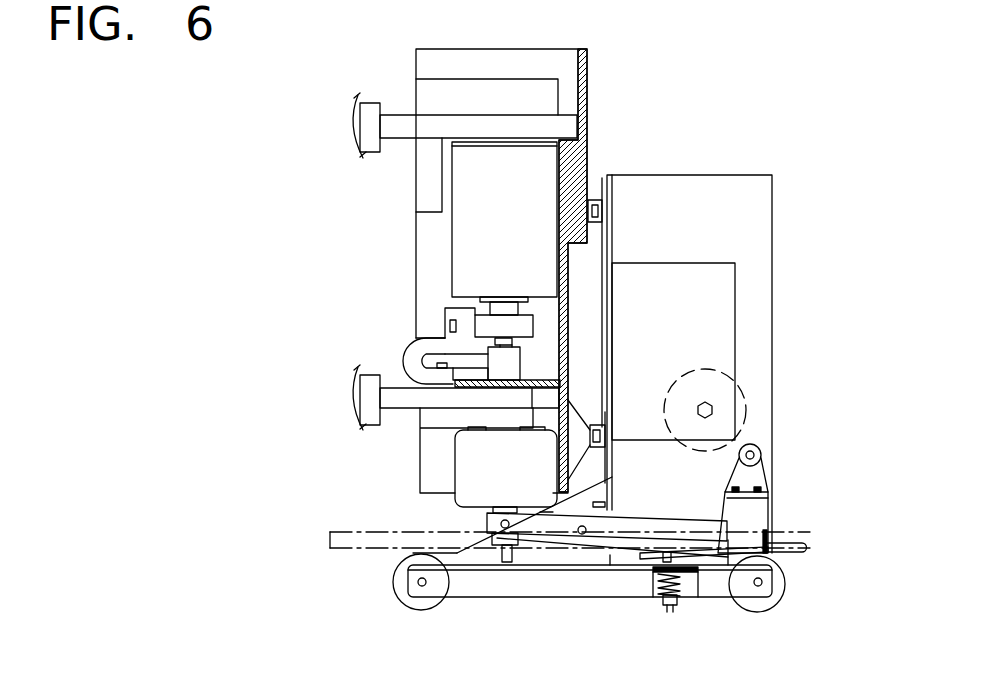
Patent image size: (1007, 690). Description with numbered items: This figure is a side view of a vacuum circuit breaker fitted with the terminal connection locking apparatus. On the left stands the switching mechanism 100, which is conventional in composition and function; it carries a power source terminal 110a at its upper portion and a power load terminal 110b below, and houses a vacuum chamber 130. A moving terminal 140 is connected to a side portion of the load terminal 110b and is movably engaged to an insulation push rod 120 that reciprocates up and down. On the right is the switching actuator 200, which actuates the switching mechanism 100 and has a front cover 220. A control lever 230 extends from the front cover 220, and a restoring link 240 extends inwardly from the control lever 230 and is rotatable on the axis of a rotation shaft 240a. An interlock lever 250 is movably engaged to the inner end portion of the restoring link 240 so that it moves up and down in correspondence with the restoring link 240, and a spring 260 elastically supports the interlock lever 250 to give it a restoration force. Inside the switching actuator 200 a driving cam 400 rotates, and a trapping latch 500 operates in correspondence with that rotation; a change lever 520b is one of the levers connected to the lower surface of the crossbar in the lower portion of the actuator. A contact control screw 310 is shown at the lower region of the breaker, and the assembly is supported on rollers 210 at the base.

The switching mechanism 100 is at (397, 74).
The power source terminal 110a is at (362, 128).
The power load terminal 110b is at (362, 400).
The insulation push rod 120 is at (465, 468).
The vacuum chamber 130 is at (455, 236).
The moving terminal 140 is at (415, 350).
The switching actuator 200 is at (715, 315).
The roller 210 is at (418, 605).
The front cover 220 is at (762, 202).
The control lever 230 is at (790, 548).
The restoring link 240 is at (698, 568).
The rotation shaft 240a is at (748, 598).
The interlock lever 250 is at (672, 612).
The spring 260 is at (658, 586).
The contact control screw 310 is at (352, 548).
The driving cam 400 is at (742, 360).
The trapping latch 500 is at (758, 470).
The change lever 520b is at (540, 525).